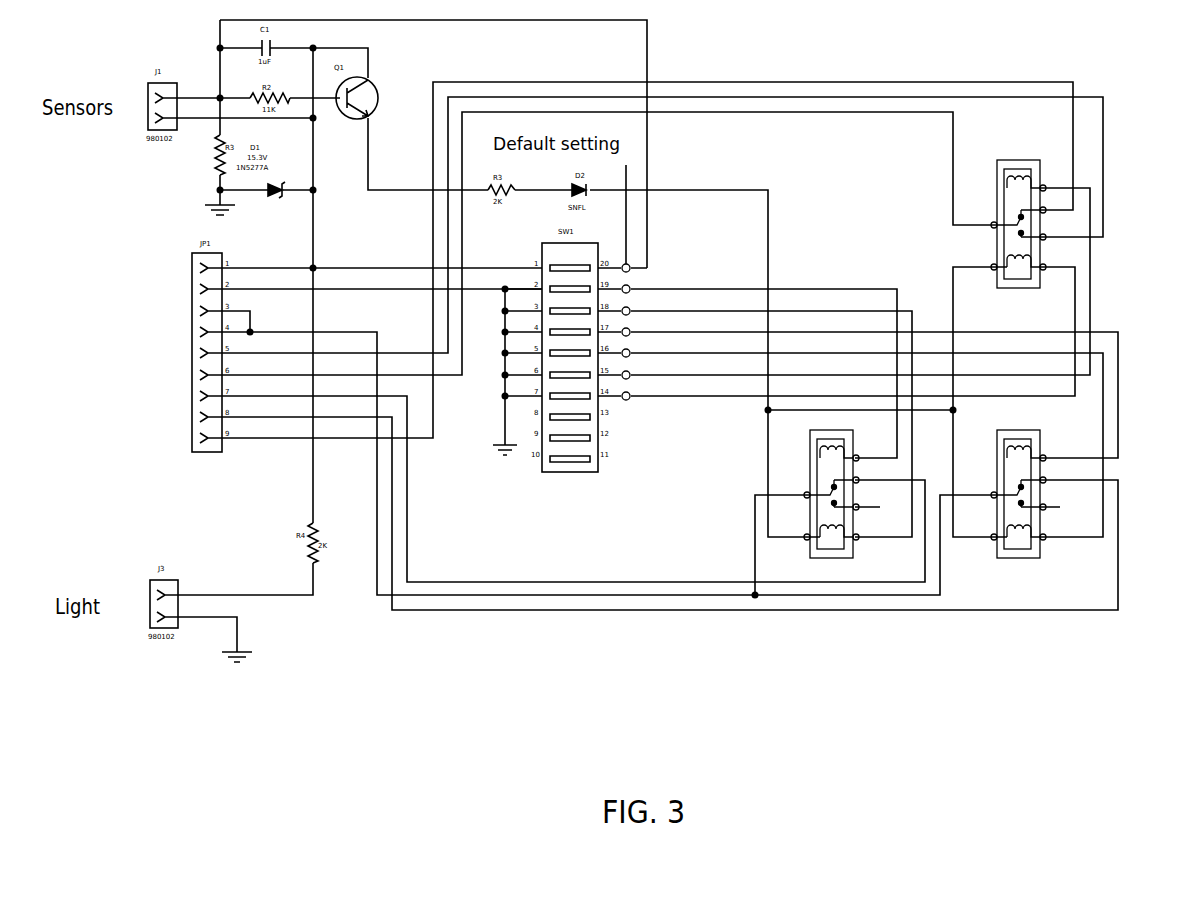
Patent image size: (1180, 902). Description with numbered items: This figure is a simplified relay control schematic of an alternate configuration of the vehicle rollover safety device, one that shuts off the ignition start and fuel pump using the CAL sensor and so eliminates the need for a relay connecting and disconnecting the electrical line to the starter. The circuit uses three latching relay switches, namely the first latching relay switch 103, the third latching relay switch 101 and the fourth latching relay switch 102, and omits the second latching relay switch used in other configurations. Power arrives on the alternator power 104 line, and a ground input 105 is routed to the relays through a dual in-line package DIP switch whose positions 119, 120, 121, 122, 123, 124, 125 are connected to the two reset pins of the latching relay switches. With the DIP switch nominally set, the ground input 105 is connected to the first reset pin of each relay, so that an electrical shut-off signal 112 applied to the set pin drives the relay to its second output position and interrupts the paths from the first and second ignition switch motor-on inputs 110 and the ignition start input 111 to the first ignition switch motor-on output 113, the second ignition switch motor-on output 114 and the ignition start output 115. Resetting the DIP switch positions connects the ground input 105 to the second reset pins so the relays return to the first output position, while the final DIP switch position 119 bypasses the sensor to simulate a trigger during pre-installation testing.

The third latching relay switch 101 is at (842, 557).
The fourth latching relay switch 102 is at (1042, 548).
The first latching relay switch 103 is at (1040, 162).
The alternator power 104 is at (341, 268).
The ground input 105 is at (341, 289).
The first and second ignition switch motor-on inputs 110 is at (568, 449).
The ignition start input 111 is at (621, 229).
The electrical shut-off signal 112 is at (568, 247).
The first ignition switch motor-on output 113 is at (532, 485).
The second ignition switch motor-on output 114 is at (629, 509).
The ignition start output 115 is at (606, 264).
The DIP switch position 119 is at (557, 268).
The DIP switch position 120 is at (682, 369).
The DIP switch position 121 is at (689, 420).
The DIP switch position 122 is at (792, 391).
The DIP switch position 123 is at (785, 441).
The DIP switch position 124 is at (778, 285).
The DIP switch position 125 is at (771, 335).